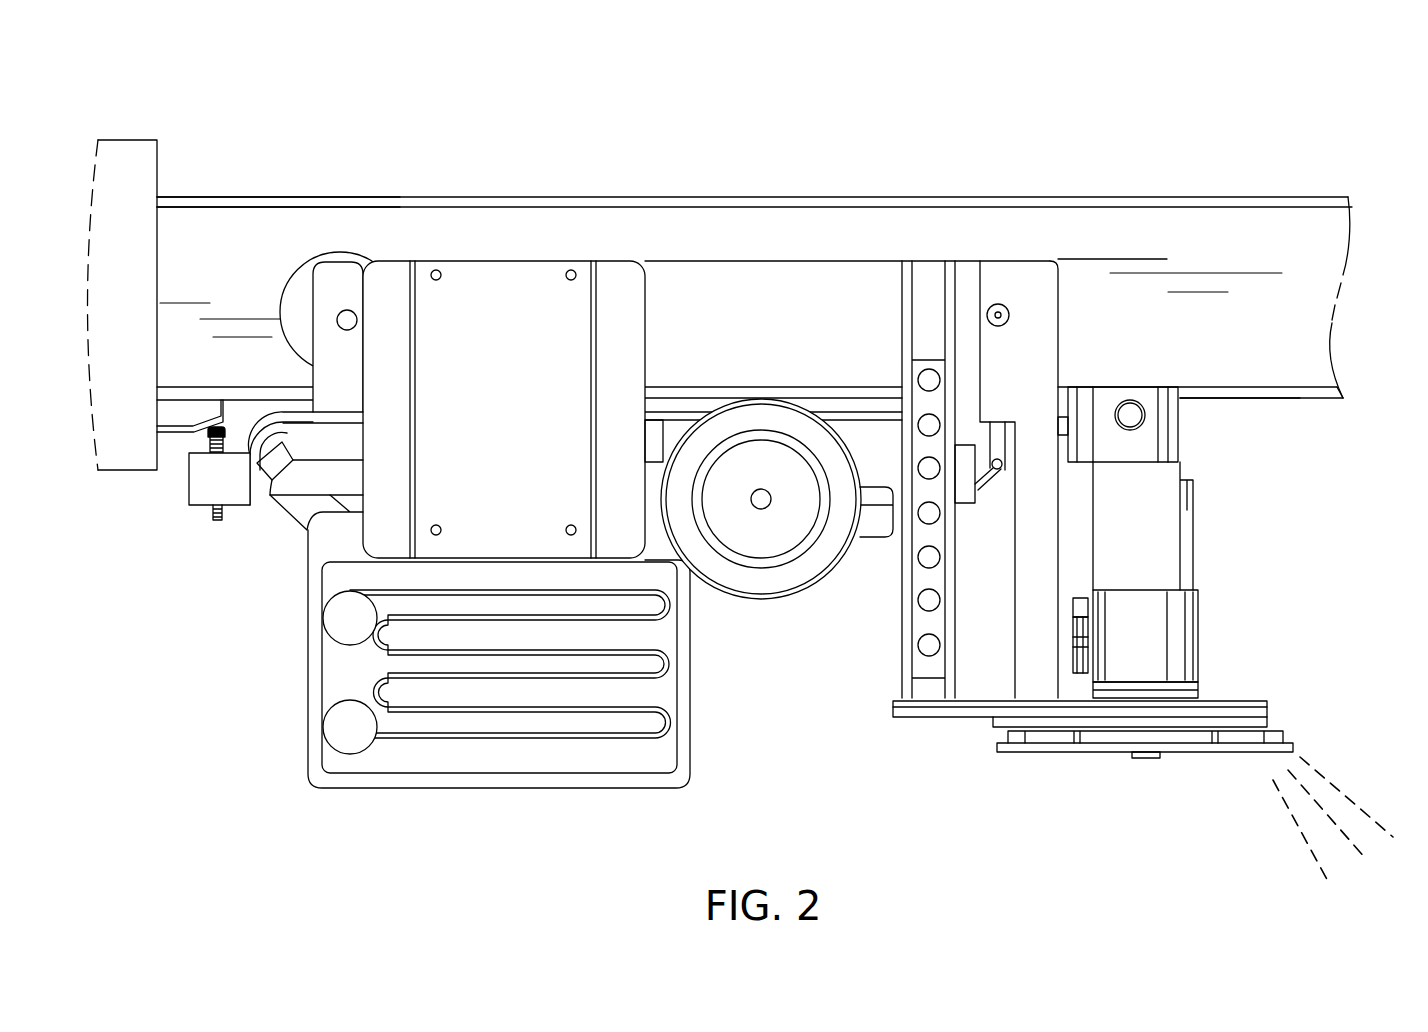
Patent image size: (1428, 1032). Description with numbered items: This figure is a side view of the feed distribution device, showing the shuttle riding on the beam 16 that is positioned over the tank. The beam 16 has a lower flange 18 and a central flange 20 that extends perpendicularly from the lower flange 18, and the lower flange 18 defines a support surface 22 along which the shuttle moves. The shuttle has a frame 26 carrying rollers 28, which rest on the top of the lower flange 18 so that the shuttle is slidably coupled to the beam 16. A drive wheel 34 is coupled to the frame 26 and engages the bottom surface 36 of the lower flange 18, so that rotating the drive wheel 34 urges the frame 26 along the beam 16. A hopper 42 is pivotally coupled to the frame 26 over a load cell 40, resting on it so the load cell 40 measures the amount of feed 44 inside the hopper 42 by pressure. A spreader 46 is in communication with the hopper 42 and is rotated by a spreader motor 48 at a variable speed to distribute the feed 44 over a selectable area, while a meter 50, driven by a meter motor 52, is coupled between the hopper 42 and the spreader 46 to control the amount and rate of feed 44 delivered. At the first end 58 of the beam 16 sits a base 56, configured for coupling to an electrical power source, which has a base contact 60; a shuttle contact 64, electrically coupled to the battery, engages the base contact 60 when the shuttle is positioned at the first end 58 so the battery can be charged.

The beam 16 is at (1220, 234).
The lower flange 18 is at (1303, 400).
The central flange 20 is at (1327, 248).
The support surface 22 is at (1298, 380).
The frame 26 is at (760, 288).
The rollers 28 is at (298, 272).
The drive wheel 34 is at (767, 582).
The bottom surface 36 is at (1208, 400).
The load cell 40 is at (963, 493).
The hopper 42 is at (1032, 643).
The feed 44 is at (1250, 841).
The spreader 46 is at (1285, 742).
The spreader motor 48 is at (1175, 639).
The meter 50 is at (1248, 700).
The meter motor 52 is at (1133, 432).
The base 56 is at (128, 148).
The first end 58 is at (158, 197).
The base contact 60 is at (170, 433).
The shuttle contact 64 is at (208, 442).